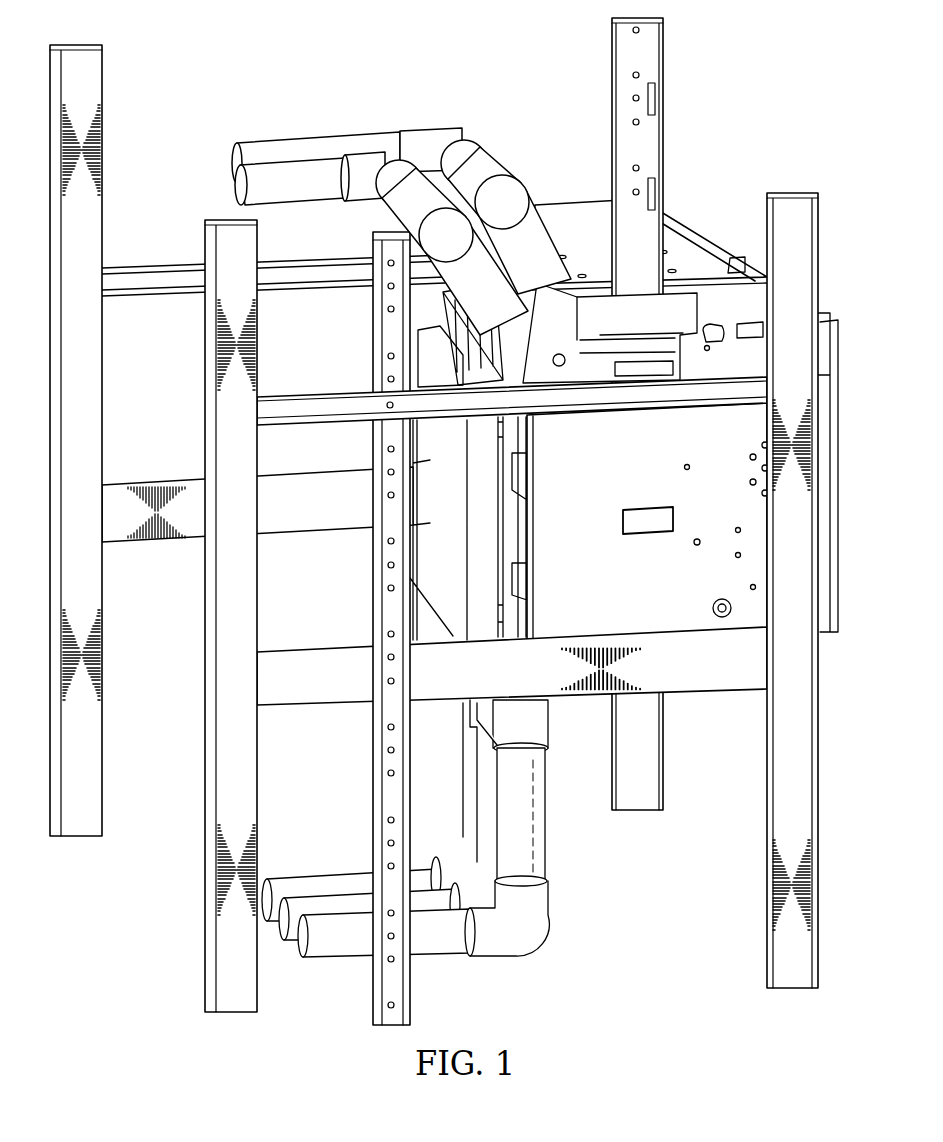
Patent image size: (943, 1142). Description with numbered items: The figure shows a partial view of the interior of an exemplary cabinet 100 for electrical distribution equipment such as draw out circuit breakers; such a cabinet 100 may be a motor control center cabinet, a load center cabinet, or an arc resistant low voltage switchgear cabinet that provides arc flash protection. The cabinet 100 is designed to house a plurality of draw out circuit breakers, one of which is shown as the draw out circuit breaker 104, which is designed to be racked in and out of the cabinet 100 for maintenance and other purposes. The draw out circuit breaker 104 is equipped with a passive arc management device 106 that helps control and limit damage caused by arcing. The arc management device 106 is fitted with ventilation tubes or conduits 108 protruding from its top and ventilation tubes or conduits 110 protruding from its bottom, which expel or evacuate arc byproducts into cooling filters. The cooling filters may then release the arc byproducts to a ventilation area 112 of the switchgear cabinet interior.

The cabinet 100 is at (401, 62).
The draw out circuit breaker 104 is at (706, 242).
The passive arc management device 106 is at (516, 514).
The ventilation tubes or conduits 108 is at (527, 231).
The ventilation tubes or conduits 110 is at (542, 823).
The ventilation area 112 is at (306, 577).